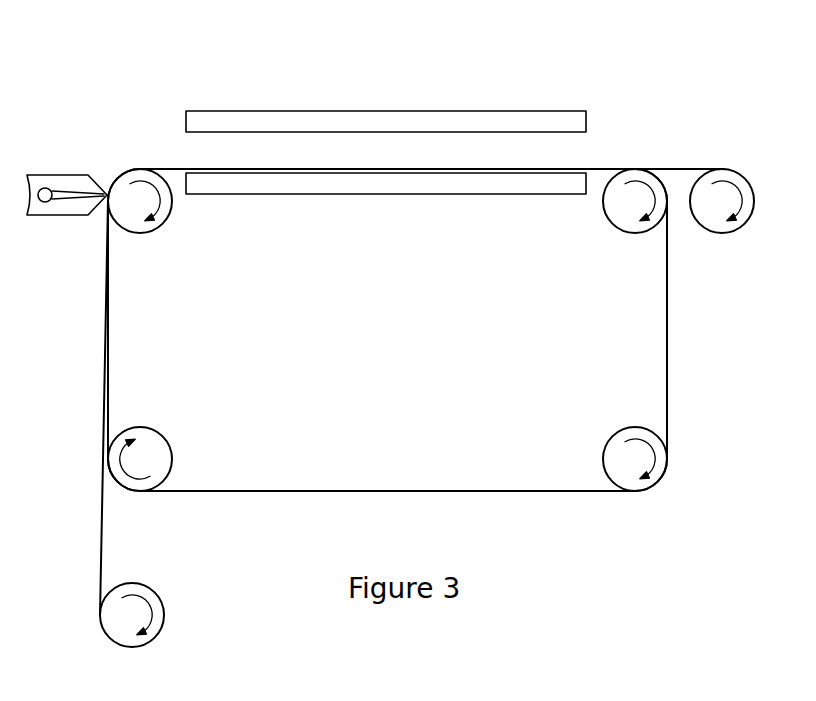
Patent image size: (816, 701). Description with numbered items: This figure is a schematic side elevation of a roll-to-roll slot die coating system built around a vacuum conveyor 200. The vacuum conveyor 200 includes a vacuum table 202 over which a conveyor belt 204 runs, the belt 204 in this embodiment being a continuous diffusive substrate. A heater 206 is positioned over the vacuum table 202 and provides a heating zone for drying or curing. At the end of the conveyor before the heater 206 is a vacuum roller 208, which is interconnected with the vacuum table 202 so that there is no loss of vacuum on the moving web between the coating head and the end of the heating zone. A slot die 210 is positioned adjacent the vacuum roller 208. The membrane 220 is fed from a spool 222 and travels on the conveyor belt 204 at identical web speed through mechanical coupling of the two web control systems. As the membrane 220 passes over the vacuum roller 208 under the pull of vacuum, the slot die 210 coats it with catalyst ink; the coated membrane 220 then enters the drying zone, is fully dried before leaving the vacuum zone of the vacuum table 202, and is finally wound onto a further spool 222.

The vacuum conveyor 200 is at (639, 118).
The vacuum table 202 is at (357, 195).
The conveyor belt 204 is at (667, 335).
The heater 206 is at (382, 111).
The vacuum roller 208 is at (148, 232).
The slot die 210 is at (60, 178).
The membrane 220 is at (102, 528).
The spool 222 is at (729, 168).